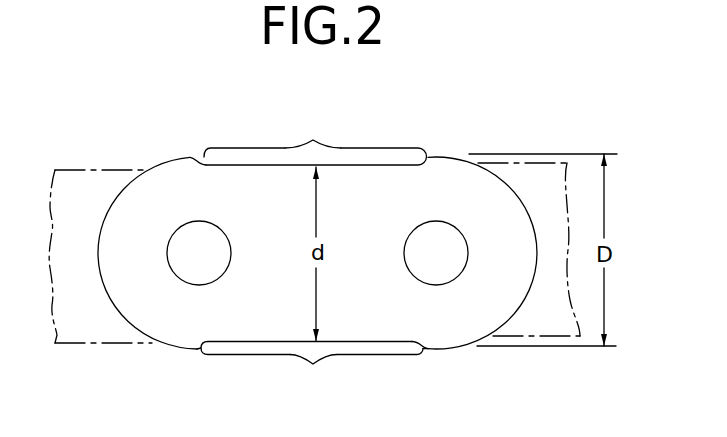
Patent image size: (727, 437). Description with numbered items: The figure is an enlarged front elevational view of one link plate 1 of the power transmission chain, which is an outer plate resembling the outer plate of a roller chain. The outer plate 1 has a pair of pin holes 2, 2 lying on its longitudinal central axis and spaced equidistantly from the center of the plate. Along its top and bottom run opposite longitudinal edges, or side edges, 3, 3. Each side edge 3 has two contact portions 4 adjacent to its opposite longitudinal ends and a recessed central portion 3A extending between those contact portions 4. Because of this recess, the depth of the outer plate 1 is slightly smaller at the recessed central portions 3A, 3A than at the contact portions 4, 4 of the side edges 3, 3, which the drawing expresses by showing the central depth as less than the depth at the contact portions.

The link plate 1 is at (364, 131).
The pin hole 2 is at (184, 224).
The longitudinal edge 3 is at (346, 177).
The recessed central portion 3A is at (313, 255).
The contact portion 4 is at (190, 157).